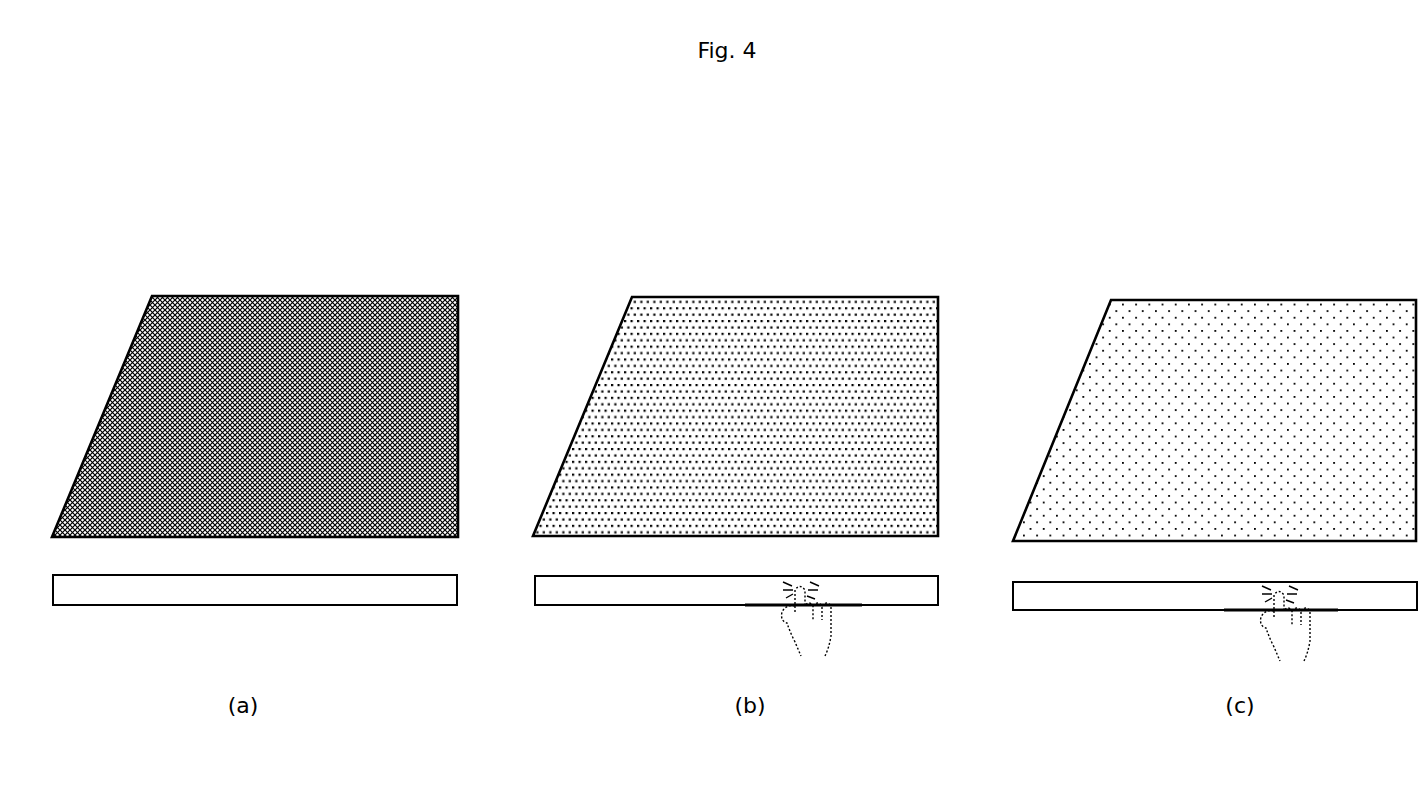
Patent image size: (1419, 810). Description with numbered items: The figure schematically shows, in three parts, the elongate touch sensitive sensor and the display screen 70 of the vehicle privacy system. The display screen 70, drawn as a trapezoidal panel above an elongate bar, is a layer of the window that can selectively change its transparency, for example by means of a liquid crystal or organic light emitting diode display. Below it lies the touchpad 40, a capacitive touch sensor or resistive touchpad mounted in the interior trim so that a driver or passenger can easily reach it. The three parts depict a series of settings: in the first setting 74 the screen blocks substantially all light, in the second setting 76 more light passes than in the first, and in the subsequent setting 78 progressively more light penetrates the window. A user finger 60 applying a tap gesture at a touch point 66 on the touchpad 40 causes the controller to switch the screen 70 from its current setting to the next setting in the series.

The touchpad 40 is at (108, 605).
The user finger 60 is at (827, 630).
The touch point 66 is at (799, 590).
The display screen 70 is at (378, 300).
The first setting 74 is at (217, 310).
The second setting 76 is at (708, 312).
The subsequent setting 78 is at (1190, 318).